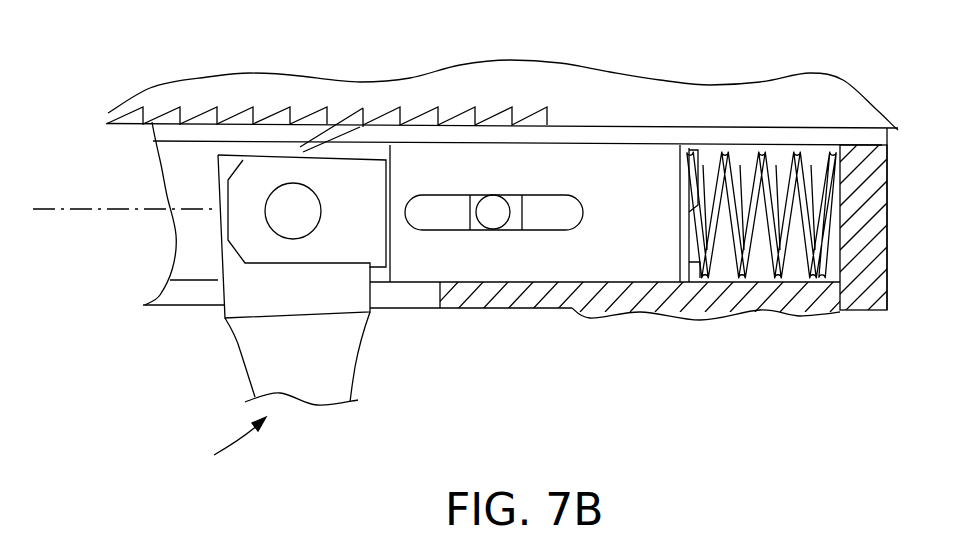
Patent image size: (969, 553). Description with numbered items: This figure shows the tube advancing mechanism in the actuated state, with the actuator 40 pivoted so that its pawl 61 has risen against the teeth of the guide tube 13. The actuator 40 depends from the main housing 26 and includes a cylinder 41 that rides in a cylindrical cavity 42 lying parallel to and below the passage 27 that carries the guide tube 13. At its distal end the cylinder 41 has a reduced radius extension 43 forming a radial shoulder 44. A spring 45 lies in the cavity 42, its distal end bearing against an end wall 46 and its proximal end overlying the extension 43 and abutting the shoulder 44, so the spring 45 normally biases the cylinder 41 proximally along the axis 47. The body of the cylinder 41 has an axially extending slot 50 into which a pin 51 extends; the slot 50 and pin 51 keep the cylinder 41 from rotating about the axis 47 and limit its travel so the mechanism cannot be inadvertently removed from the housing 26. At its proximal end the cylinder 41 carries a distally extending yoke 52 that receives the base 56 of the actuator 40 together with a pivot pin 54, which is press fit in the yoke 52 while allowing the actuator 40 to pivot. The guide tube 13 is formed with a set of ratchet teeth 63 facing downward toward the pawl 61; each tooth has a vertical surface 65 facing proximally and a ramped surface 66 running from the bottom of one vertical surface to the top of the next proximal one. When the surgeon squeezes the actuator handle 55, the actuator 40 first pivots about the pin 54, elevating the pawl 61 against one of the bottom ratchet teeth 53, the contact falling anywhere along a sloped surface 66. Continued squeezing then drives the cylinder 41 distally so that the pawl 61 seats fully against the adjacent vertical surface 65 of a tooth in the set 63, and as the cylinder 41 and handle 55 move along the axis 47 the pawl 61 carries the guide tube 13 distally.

The guide tube 13 is at (623, 112).
The main housing 26 is at (620, 300).
The passage 27 is at (157, 143).
The actuator 40 is at (222, 447).
The cylinder 41 is at (560, 270).
The cylindrical cavity 42 is at (188, 243).
The reduced radius extension 43 is at (700, 238).
The radial shoulder 44 is at (690, 272).
The spring 45 is at (748, 290).
The end wall 46 is at (832, 270).
The axis 47 is at (48, 207).
The slot 50 is at (435, 232).
The pin 51 is at (493, 230).
The yoke 52 is at (316, 175).
The ratchet teeth 53 is at (265, 353).
The pivot pin 54 is at (284, 183).
The actuator handle 55 is at (242, 350).
The base 56 is at (353, 292).
The pawl 61 is at (367, 120).
The first set of ratchet teeth 63 is at (447, 120).
The vertical surface 65 is at (352, 122).
The ramped surface 66 is at (198, 120).